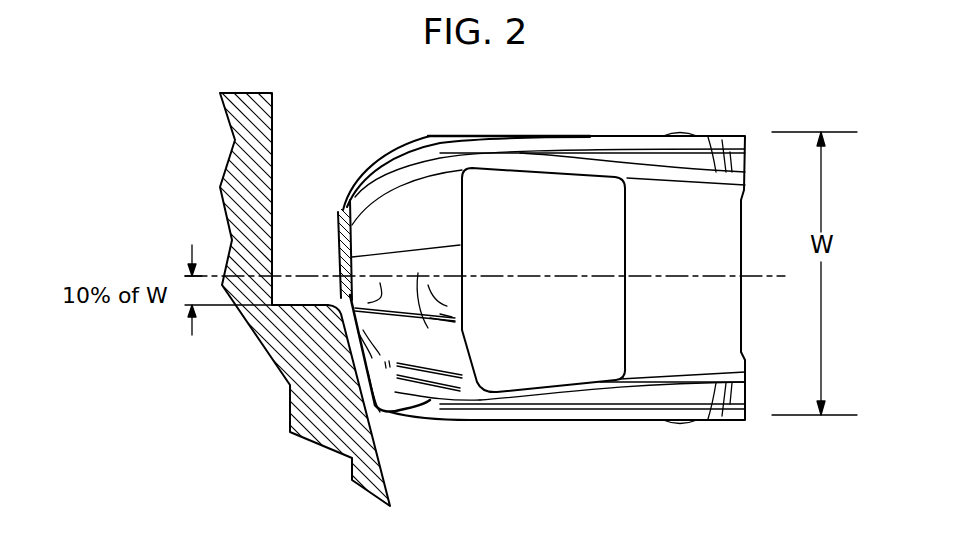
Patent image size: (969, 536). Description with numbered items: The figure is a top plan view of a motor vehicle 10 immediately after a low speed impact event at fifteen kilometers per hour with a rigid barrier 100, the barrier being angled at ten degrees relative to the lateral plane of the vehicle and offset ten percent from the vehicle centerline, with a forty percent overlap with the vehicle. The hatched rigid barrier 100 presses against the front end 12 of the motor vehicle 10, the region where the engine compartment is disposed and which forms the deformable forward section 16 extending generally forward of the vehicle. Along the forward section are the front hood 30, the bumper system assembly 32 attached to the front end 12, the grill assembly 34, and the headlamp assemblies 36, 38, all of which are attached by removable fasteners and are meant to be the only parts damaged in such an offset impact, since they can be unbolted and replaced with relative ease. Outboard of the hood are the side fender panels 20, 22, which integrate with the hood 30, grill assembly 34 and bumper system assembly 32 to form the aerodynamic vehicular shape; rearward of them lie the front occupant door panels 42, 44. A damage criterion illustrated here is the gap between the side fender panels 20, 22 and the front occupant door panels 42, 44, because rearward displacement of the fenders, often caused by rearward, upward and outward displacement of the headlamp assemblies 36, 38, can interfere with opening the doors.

The motor vehicle 10 is at (697, 115).
The front end 12 is at (321, 192).
The deformable forward section 16 is at (427, 127).
The side fender panel 20 is at (484, 150).
The side fender panel 22 is at (442, 412).
The front hood 30 is at (380, 203).
The bumper system assembly 32 is at (340, 233).
The grill assembly 34 is at (337, 270).
The headlamp assembly 36 is at (390, 167).
The headlamp assembly 38 is at (385, 395).
The front occupant door panel 42 is at (606, 143).
The front occupant door panel 44 is at (598, 413).
The rigid barrier 100 is at (287, 352).